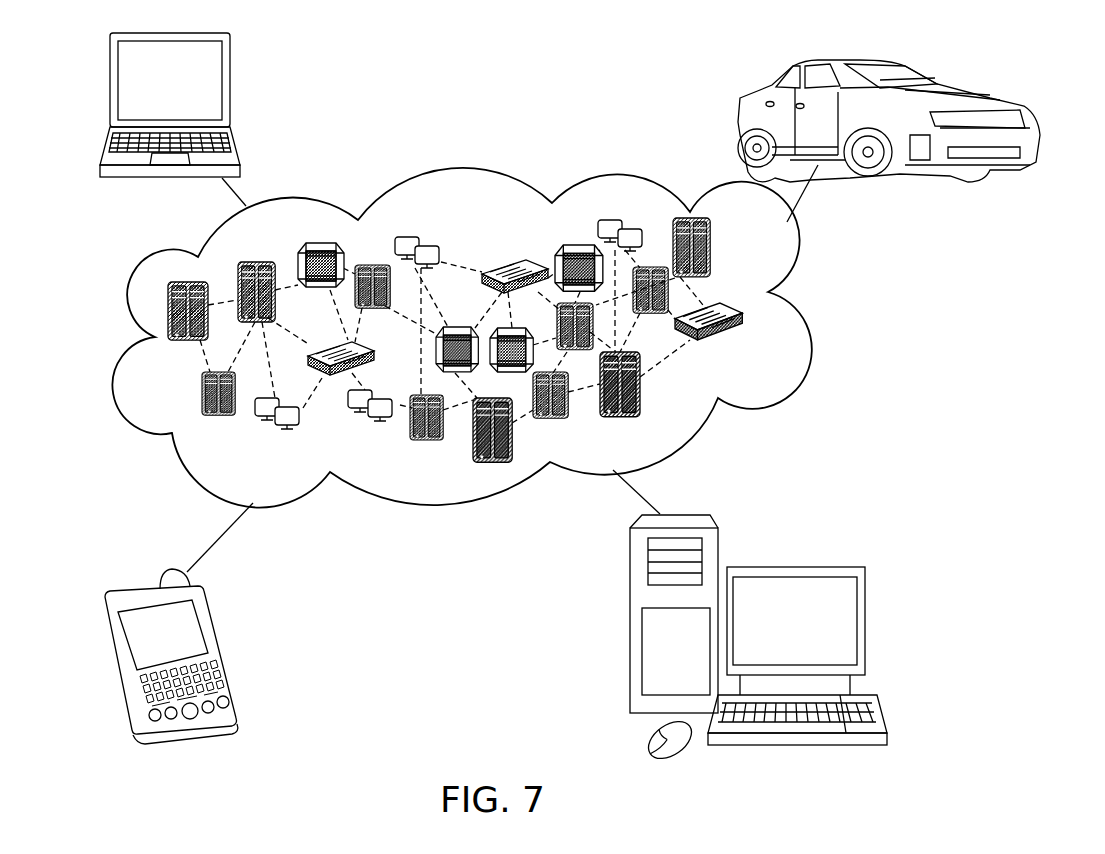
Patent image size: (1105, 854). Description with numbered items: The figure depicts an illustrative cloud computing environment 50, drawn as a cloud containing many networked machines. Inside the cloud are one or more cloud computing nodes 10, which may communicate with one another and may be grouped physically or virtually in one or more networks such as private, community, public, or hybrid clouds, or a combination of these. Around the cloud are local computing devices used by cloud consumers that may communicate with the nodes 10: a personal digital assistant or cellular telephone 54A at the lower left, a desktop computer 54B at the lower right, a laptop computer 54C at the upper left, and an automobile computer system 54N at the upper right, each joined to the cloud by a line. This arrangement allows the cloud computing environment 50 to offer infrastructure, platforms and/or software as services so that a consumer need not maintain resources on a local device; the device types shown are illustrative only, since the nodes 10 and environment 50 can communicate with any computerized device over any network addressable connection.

The cloud computing node 10 is at (758, 343).
The cloud computing environment 50 is at (808, 332).
The personal digital assistant or cellular telephone 54A is at (218, 643).
The desktop computer 54B is at (827, 567).
The laptop computer 54C is at (231, 97).
The automobile computer system 54N is at (943, 82).